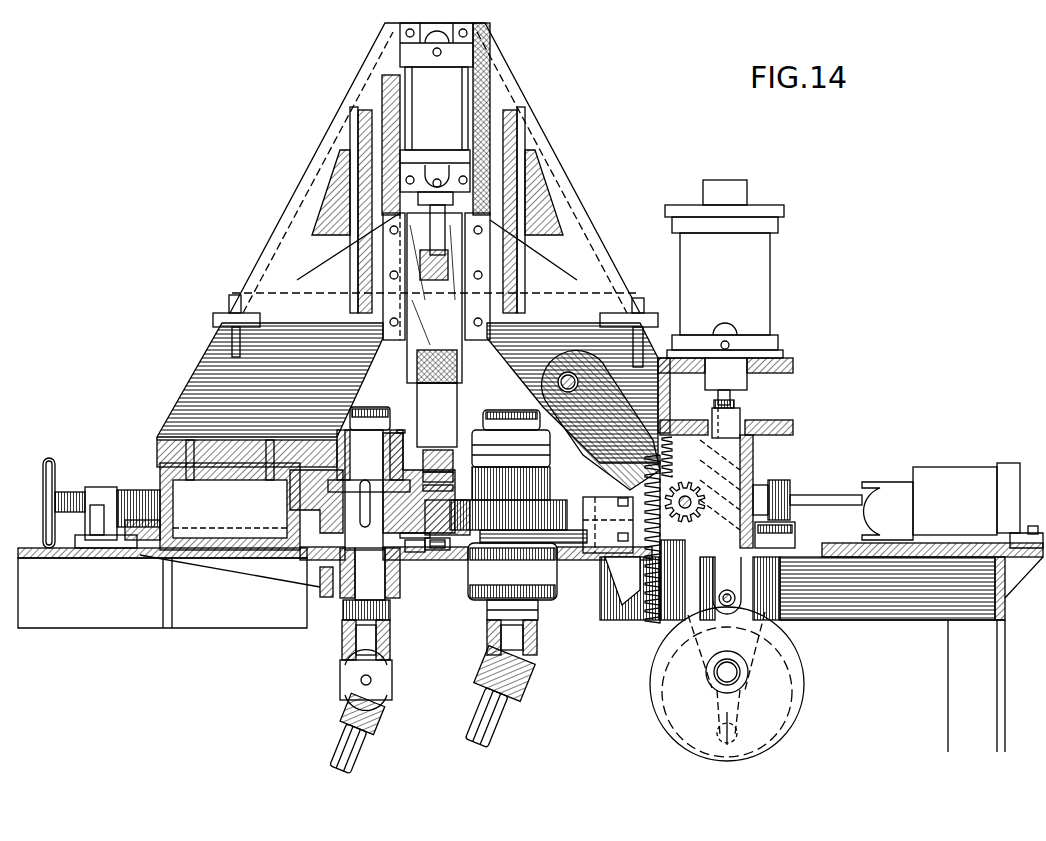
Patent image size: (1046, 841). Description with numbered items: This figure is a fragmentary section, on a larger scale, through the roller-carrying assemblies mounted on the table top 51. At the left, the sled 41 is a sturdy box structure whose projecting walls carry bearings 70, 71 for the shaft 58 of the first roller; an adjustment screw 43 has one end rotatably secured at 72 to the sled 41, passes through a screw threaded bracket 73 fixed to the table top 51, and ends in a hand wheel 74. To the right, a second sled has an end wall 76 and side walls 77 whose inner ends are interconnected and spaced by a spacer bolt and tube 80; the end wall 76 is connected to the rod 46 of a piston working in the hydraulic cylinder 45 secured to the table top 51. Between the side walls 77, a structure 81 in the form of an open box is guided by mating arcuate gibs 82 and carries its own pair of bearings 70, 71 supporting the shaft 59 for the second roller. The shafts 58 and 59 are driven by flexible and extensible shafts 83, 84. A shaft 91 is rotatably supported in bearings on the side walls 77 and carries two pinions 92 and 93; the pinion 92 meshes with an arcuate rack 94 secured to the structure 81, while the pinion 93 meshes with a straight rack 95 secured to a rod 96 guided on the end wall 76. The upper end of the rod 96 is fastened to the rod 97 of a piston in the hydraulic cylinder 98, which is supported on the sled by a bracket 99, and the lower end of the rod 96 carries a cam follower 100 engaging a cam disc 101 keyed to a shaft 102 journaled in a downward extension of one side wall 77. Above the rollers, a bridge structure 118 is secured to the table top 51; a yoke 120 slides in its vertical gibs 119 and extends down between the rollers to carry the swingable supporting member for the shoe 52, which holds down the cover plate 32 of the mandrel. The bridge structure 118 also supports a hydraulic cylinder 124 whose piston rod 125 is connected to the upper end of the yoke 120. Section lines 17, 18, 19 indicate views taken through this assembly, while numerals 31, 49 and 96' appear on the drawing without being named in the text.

The section line 17 is at (250, 393).
The section line 18 is at (668, 600).
The section line 19 is at (700, 522).
The spacer 31 is at (415, 540).
The cover plate 32 is at (448, 507).
The sled 41 is at (216, 516).
The adjustment screw 43 is at (70, 492).
The hydraulic cylinder 45 is at (952, 470).
The rod 46 is at (838, 497).
The key 49 is at (435, 548).
The table top 51 is at (62, 560).
The shoe 52 is at (426, 485).
The shaft 58 is at (333, 500).
The shaft 59 is at (537, 640).
The bearing 70 is at (392, 430).
The bearing 71 is at (415, 585).
The rotatable securing point 72 is at (150, 478).
The screw threaded bracket 73 is at (107, 490).
The hand wheel 74 is at (46, 490).
The end wall 76 is at (700, 477).
The side walls 77 is at (601, 420).
The spacer bolt and tube 80 is at (575, 388).
The structure 81 is at (608, 525).
The arcuate gibs 82 is at (536, 412).
The flexible and extensible shaft 83 is at (396, 746).
The flexible and extensible shaft 84 is at (545, 736).
The shaft 91 is at (665, 565).
The pinion 92 is at (692, 490).
The pinion 93 is at (650, 578).
The arcuate rack 94 is at (615, 600).
The straight rack 95 is at (757, 445).
The rod 96 is at (801, 536).
The block 96' is at (758, 419).
The rod 97 is at (735, 400).
The hydraulic cylinder 98 is at (762, 290).
The bracket 99 is at (795, 366).
The cam follower 100 is at (728, 615).
The cam disc 101 is at (787, 728).
The shaft 102 is at (740, 672).
The bridge structure 118 is at (318, 178).
The vertical gibs 119 is at (485, 235).
The yoke 120 is at (410, 388).
The hydraulic cylinder 124 is at (458, 78).
The rod 125 is at (437, 218).